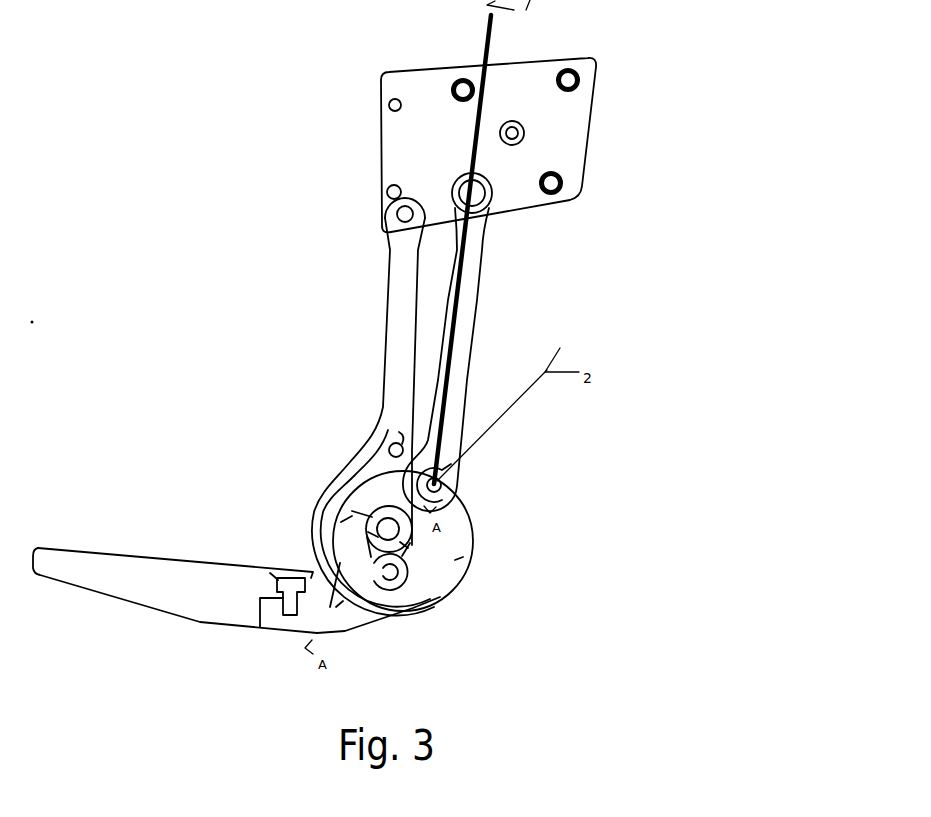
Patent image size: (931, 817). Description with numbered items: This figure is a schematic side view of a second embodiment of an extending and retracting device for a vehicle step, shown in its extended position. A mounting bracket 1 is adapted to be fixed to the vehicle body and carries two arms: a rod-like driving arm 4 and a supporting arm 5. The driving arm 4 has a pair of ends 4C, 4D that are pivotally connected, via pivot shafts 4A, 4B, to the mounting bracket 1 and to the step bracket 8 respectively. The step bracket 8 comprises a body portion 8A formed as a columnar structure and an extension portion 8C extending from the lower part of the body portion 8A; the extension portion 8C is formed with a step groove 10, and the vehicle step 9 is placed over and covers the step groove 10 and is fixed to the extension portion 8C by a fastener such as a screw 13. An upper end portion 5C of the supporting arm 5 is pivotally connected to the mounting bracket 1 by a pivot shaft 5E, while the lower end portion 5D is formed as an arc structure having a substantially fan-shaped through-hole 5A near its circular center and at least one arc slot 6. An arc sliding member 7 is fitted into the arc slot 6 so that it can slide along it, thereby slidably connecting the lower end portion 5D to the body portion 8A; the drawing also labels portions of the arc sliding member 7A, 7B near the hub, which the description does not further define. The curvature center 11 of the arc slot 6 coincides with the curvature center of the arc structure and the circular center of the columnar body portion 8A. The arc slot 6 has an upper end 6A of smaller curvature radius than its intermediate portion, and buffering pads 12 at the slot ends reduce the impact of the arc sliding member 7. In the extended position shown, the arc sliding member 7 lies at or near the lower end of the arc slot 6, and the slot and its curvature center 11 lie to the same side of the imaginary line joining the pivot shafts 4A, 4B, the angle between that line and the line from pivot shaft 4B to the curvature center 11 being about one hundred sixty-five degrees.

The mounting bracket 1 is at (415, 160).
The driving arm 4 is at (462, 290).
The pivot shaft 4A is at (478, 206).
The pivot shaft 4B is at (441, 481).
The end of driving arm 4C is at (476, 214).
The end of driving arm 4D is at (446, 478).
The supporting arm 5 is at (400, 350).
The fan-shaped through-hole 5A is at (400, 542).
The upper end portion of supporting arm 5C is at (387, 227).
The lower end portion of supporting arm 5D is at (352, 511).
The pivot shaft 5E is at (387, 201).
The arc slot 6 is at (341, 522).
The upper end of arc slot 6A is at (382, 472).
The arc sliding member 7 is at (368, 541).
The hub arm 7A is at (410, 508).
The hub lobe 7B is at (400, 605).
The step bracket 8 is at (450, 550).
The body portion of step bracket 8A is at (463, 557).
The extension portion of step bracket 8C is at (336, 607).
The vehicle step 9 is at (178, 588).
The step groove 10 is at (290, 608).
The curvature center of arc slot 11 is at (368, 532).
The buffering pad 12 is at (388, 587).
The screw 13 is at (265, 570).